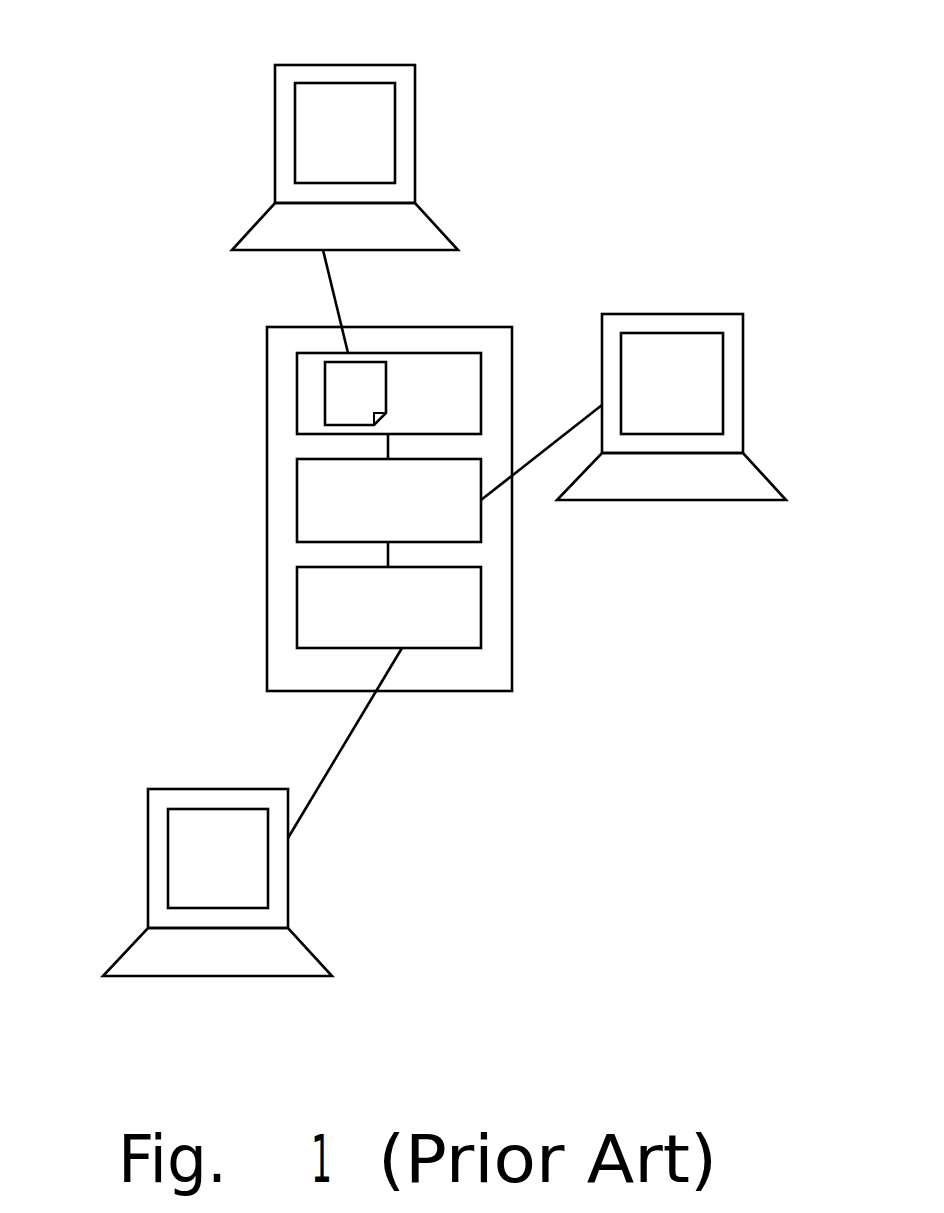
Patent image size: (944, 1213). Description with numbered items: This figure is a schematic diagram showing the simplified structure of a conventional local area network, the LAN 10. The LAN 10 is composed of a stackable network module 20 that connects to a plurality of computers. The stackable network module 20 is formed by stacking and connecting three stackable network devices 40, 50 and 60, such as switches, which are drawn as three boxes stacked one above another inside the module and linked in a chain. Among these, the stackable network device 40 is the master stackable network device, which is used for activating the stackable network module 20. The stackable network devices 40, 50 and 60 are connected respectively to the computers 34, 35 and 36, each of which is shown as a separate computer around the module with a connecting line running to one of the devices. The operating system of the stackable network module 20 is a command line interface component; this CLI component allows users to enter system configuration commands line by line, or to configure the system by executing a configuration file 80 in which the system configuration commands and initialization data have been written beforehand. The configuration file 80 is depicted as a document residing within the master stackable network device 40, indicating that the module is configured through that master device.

The local area network 10 is at (138, 103).
The stackable network module 20 is at (278, 436).
The computer 34 is at (415, 133).
The computer 35 is at (672, 314).
The computer 36 is at (148, 857).
The stackable network device 40 is at (447, 353).
The stackable network device 50 is at (481, 527).
The stackable network device 60 is at (297, 607).
The configuration file 80 is at (348, 381).